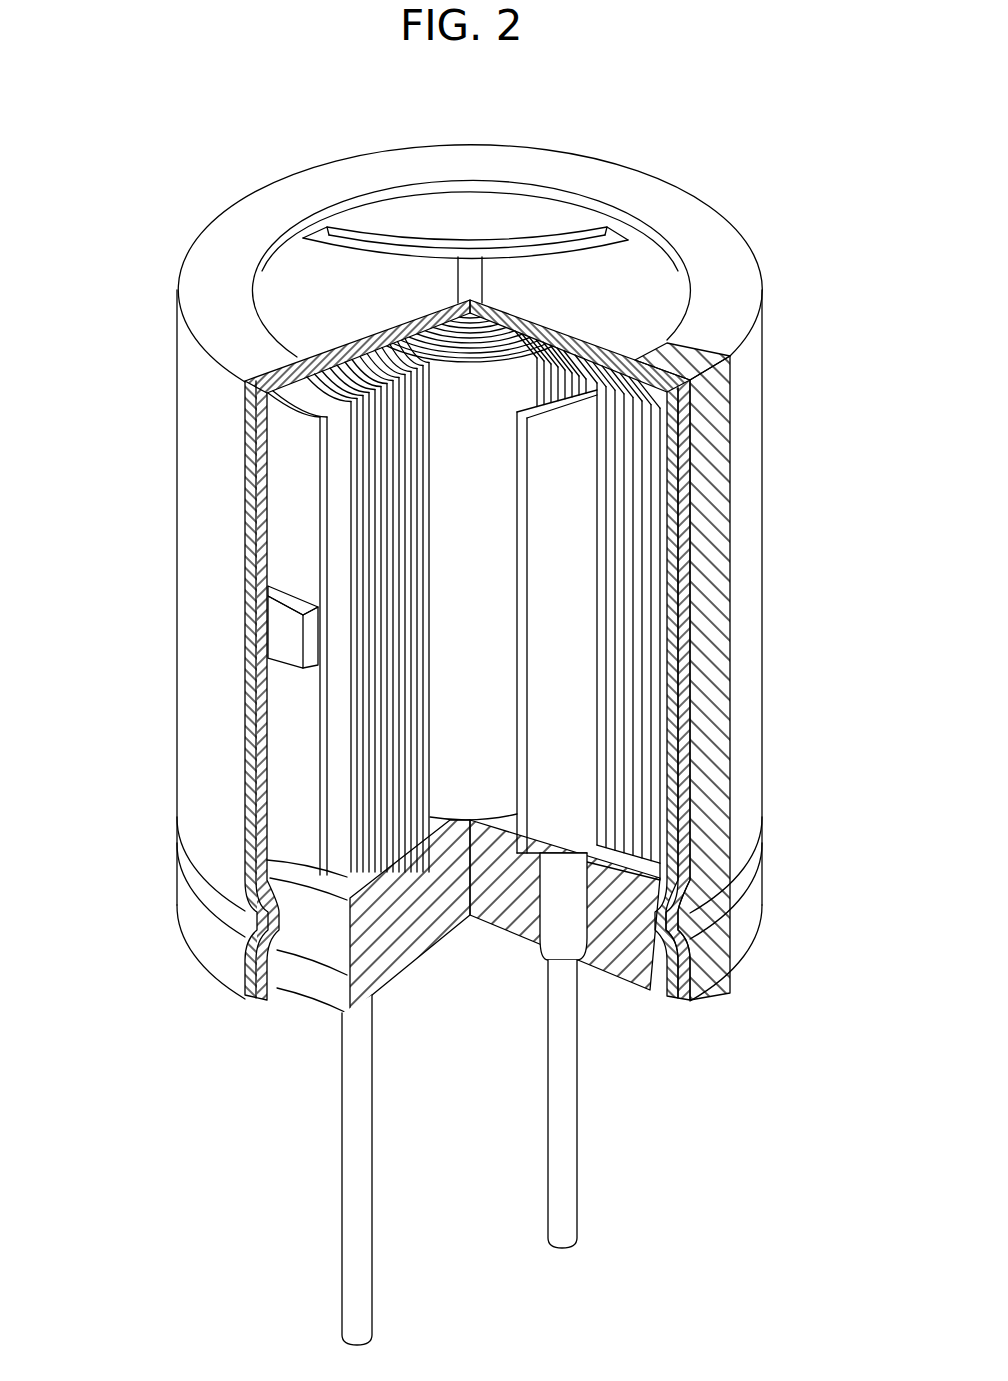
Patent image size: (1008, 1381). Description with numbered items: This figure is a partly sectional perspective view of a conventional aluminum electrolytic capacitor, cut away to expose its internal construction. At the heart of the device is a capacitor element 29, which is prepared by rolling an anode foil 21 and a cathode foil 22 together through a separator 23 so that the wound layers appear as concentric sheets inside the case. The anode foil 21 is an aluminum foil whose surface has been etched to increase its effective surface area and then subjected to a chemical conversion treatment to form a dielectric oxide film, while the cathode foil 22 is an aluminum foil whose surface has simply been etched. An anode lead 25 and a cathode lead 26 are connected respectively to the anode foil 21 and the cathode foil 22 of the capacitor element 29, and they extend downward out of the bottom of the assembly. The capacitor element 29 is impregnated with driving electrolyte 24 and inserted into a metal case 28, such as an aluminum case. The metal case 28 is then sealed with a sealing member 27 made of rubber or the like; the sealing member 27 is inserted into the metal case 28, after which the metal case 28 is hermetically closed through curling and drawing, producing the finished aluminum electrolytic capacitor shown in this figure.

The anode foil 21 is at (607, 690).
The cathode foil 22 is at (565, 508).
The separator 23 is at (617, 782).
The driving electrolyte 24 is at (600, 622).
The anode lead 25 is at (347, 1122).
The cathode lead 26 is at (572, 1122).
The sealing member 27 is at (432, 945).
The metal case 28 is at (292, 283).
The capacitor element 29 is at (293, 747).